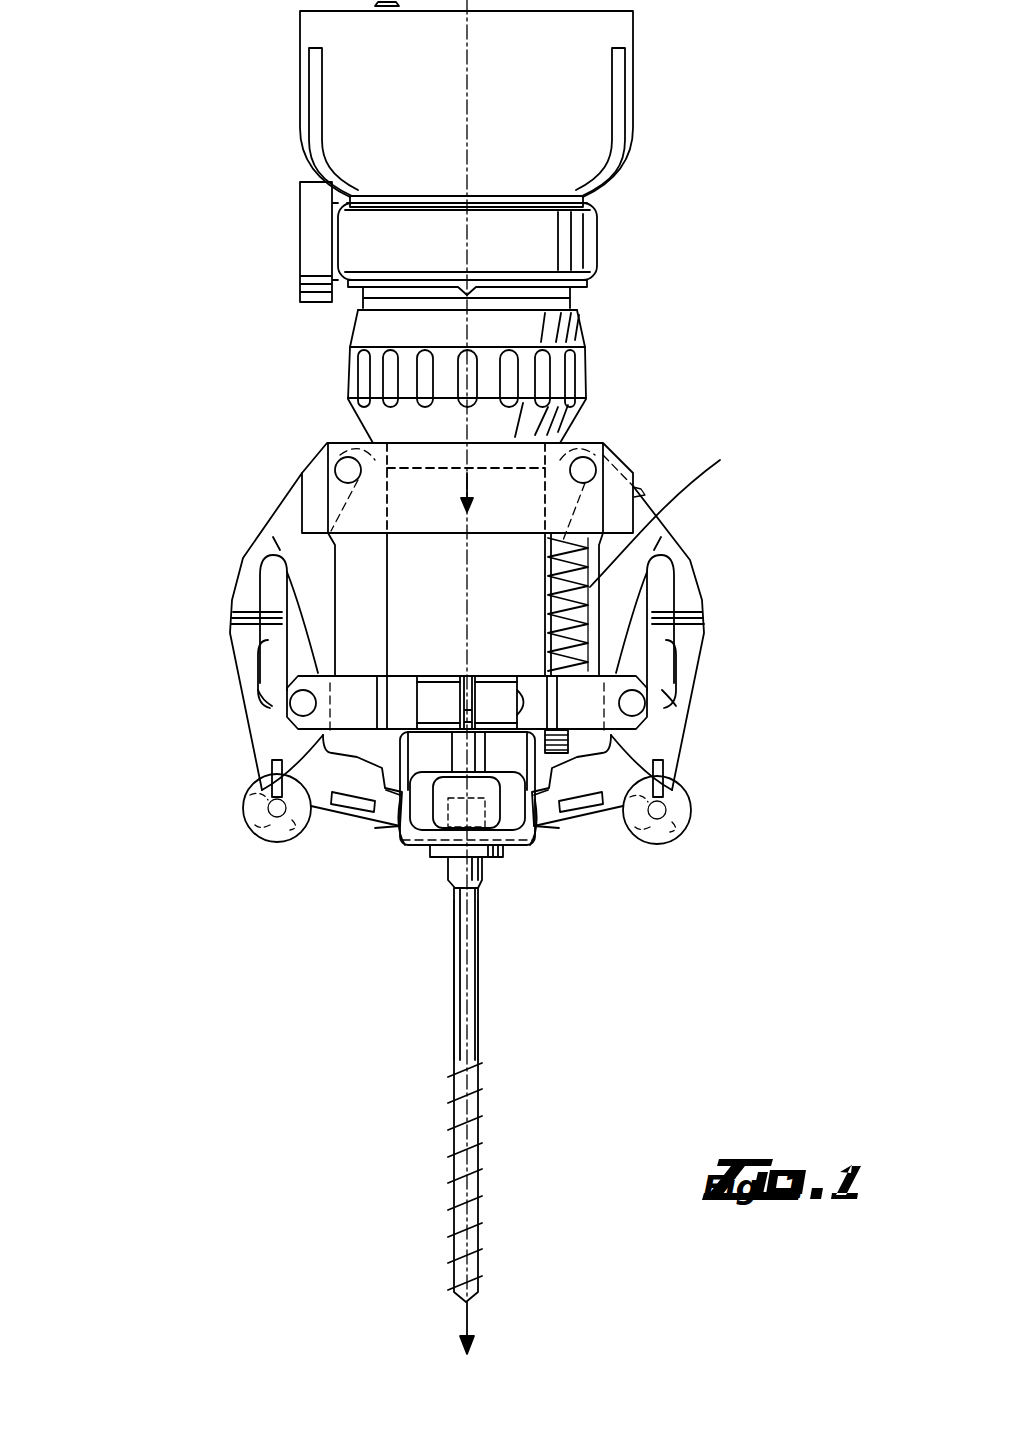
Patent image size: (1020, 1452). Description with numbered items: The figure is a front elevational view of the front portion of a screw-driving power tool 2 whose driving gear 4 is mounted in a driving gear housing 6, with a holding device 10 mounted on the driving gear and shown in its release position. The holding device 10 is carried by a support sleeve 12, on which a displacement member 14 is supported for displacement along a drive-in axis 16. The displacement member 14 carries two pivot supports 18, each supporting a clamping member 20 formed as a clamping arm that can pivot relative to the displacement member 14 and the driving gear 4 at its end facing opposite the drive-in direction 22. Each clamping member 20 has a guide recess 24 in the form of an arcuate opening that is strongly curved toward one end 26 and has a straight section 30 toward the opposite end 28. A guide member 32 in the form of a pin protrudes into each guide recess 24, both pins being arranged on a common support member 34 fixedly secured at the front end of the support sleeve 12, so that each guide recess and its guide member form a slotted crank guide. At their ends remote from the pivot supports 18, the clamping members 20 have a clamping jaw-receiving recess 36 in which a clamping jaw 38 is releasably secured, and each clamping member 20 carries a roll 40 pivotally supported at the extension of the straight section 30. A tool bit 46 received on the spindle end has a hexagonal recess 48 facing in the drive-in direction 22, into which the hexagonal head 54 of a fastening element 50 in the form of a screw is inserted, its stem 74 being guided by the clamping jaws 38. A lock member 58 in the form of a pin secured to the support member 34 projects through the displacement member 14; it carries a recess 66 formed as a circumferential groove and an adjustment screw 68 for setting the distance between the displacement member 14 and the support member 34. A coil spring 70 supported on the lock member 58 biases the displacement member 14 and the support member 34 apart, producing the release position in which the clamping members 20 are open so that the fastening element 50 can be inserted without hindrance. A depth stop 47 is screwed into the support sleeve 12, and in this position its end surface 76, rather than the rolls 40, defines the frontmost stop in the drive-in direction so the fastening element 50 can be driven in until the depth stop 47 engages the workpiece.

The screw-driving power tool 2 is at (140, 262).
The driving gear 4 is at (466, 104).
The driving gear housing 6 is at (588, 64).
The holding device 10 is at (692, 508).
The support sleeve 12 is at (465, 604).
The displacement member 14 is at (592, 438).
The drive-in axis 16 is at (477, 972).
The pivot supports 18 is at (348, 462).
The clamping member 20 is at (215, 652).
The drive-in direction 22 is at (470, 1318).
The guide recess 24 is at (282, 607).
The end of guide recess 26 is at (273, 553).
The opposite end of guide recess 28 is at (323, 735).
The straight section 30 is at (263, 678).
The guide member 32 is at (300, 712).
The support member 34 is at (358, 732).
The clamping jaw-receiving recess 36 is at (610, 838).
The clamping jaw 38 is at (383, 818).
The roll 40 is at (243, 808).
The tool bit 46 is at (457, 788).
The depth stop 47 is at (420, 843).
The hexagonal recess 48 is at (485, 772).
The fastening element 50 is at (495, 1163).
The hexagonal head 54 is at (498, 843).
The lock member 58 is at (547, 668).
The recess 66 is at (547, 605).
The adjustment screw 68 is at (568, 745).
The coil spring 70 is at (720, 460).
The stem 74 is at (458, 1030).
The end surface 76 is at (405, 848).